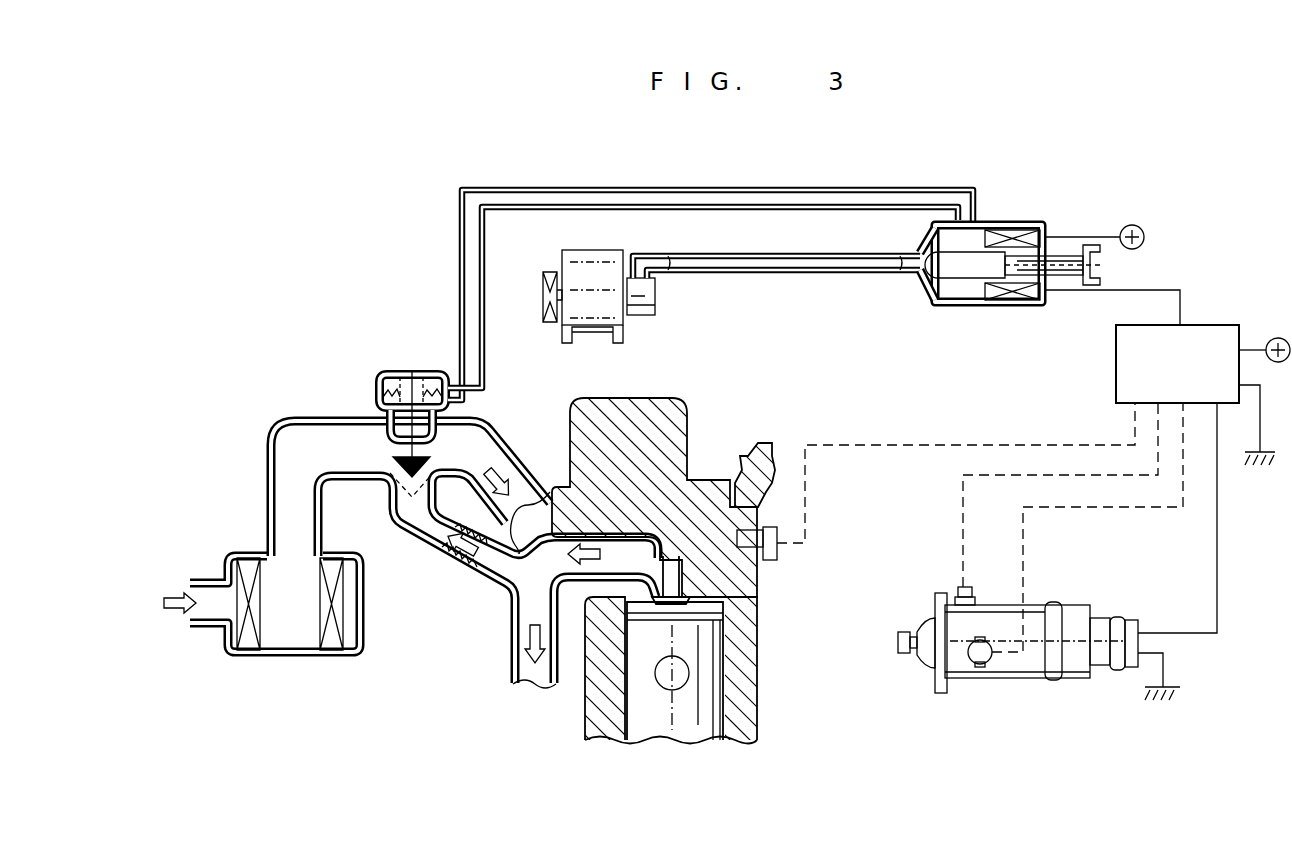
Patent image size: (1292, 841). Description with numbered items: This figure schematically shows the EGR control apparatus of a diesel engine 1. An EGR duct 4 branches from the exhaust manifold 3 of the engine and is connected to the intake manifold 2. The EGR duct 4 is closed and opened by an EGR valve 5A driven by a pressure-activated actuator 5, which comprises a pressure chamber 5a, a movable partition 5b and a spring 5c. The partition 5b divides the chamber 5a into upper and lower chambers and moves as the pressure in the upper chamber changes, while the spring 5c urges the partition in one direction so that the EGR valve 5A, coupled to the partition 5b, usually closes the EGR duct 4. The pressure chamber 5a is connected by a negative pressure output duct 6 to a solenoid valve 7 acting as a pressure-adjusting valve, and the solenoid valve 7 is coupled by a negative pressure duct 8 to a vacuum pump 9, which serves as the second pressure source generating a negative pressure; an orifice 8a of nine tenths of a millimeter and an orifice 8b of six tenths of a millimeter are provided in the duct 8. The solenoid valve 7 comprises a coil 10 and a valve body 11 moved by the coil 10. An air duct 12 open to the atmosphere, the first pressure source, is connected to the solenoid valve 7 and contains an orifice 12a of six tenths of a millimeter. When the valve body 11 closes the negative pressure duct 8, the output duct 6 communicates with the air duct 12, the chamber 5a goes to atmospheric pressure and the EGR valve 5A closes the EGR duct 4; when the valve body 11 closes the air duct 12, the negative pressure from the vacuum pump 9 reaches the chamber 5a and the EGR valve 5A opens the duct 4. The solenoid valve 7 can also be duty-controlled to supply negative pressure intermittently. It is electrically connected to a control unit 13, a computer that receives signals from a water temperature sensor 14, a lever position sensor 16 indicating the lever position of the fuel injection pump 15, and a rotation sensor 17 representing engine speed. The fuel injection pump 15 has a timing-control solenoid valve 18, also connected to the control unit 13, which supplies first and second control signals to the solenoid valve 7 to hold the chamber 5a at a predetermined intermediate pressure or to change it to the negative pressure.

The diesel engine 1 is at (655, 403).
The intake manifold 2 is at (267, 462).
The exhaust manifold 3 is at (520, 600).
The EGR duct 4 is at (412, 525).
The pressure-activated actuator 5 is at (382, 404).
The pressure chamber 5a is at (418, 378).
The movable partition 5b is at (383, 405).
The spring 5c is at (403, 378).
The EGR valve 5A is at (397, 462).
The negative pressure output duct 6 is at (770, 186).
The solenoid valve 7 is at (1050, 234).
The negative pressure duct 8 is at (776, 284).
The orifice 8a is at (672, 276).
The orifice 8b is at (900, 276).
The vacuum pump 9 is at (562, 262).
The coil 10 is at (1007, 228).
The valve body 11 is at (962, 268).
The air duct 12 is at (1100, 264).
The orifice 12a is at (1065, 280).
The control unit 13 is at (1116, 352).
The water temperature sensor 14 is at (775, 550).
The fuel injection pump 15 is at (1057, 566).
The lever position sensor 16 is at (980, 667).
The rotation sensor 17 is at (975, 592).
The timing-control solenoid valve 18 is at (1131, 625).